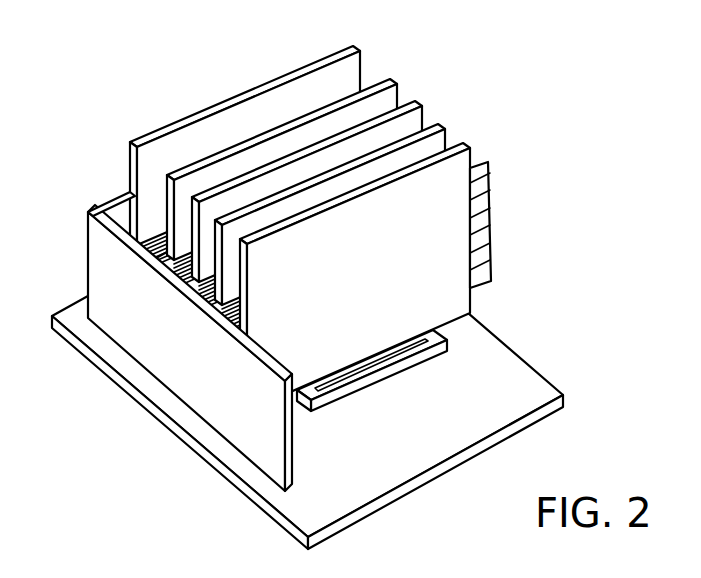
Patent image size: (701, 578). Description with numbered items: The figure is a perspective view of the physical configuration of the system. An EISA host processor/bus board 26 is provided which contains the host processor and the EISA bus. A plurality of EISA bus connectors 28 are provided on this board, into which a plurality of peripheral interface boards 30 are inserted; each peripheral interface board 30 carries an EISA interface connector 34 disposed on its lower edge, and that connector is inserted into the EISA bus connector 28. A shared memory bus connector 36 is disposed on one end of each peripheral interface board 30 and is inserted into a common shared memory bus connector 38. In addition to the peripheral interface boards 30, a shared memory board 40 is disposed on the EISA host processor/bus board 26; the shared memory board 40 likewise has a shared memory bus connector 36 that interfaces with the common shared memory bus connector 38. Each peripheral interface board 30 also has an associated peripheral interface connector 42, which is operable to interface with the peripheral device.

The EISA host processor/bus board 26 is at (523, 395).
The EISA bus connector 28 is at (450, 349).
The peripheral interface board 30 is at (391, 80).
The EISA interface connector 34 is at (433, 330).
The shared memory bus connector 36 is at (114, 197).
The common shared memory bus connector 38 is at (88, 265).
The shared memory board 40 is at (202, 108).
The peripheral interface connector 42 is at (489, 208).